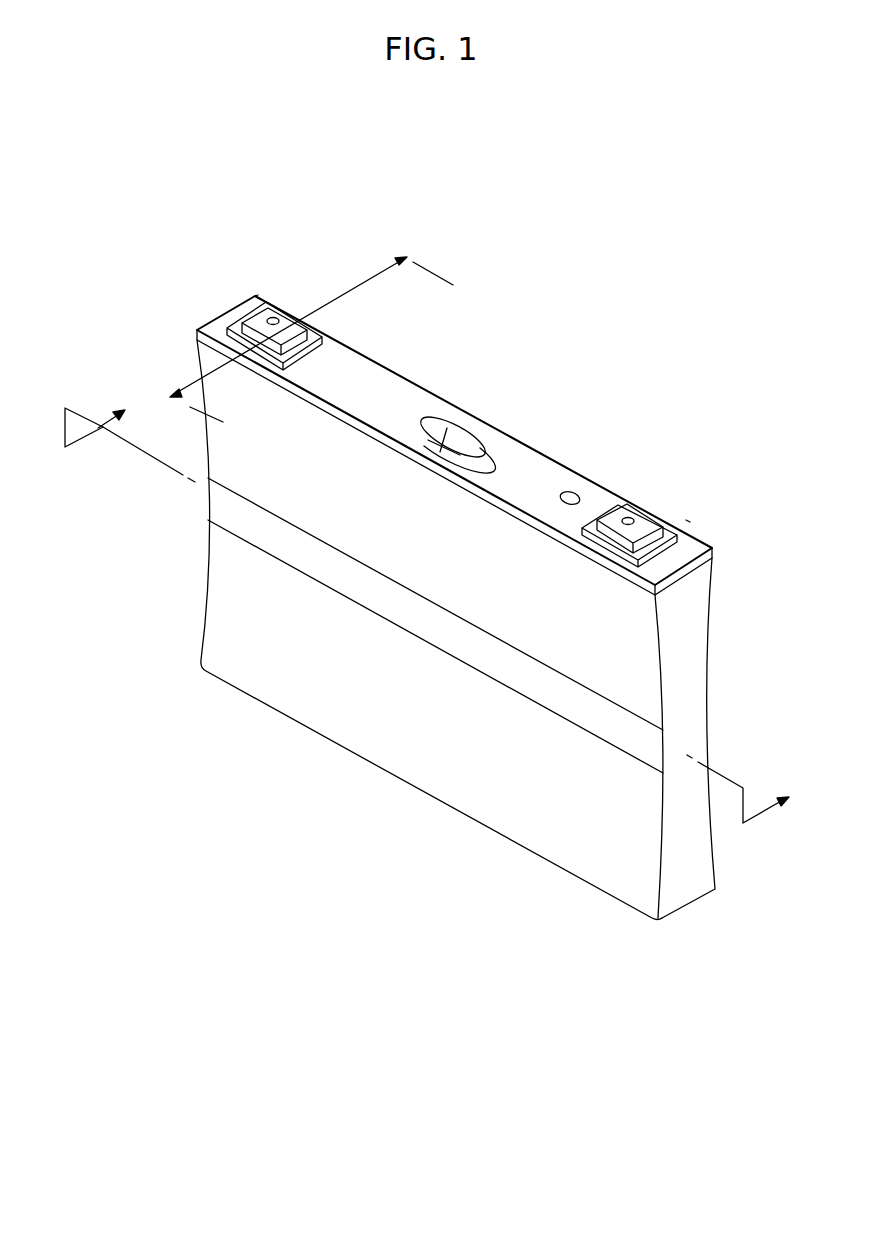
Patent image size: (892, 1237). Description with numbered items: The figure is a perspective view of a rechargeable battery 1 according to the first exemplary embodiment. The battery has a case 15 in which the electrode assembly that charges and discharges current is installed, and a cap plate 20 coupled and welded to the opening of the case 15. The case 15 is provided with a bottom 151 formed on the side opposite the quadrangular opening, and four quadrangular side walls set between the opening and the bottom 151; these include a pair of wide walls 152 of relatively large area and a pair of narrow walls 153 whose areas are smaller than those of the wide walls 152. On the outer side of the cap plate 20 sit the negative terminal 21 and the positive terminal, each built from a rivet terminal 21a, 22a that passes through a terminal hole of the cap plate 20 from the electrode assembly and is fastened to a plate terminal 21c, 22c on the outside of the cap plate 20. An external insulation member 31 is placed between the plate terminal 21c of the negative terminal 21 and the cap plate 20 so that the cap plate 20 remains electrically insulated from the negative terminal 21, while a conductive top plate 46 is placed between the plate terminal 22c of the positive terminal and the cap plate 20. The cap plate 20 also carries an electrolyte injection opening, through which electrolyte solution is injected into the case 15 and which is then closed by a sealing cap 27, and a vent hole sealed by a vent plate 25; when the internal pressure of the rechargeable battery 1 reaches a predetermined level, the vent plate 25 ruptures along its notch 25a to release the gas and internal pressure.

The rechargeable battery 1 is at (445, 182).
The case 15 is at (708, 996).
The bottom 151 is at (533, 858).
The wide walls 152 is at (605, 863).
The narrow walls 153 is at (682, 880).
The cap plate 20 is at (368, 378).
The negative terminal 21 is at (243, 324).
The rivet terminal 21a is at (270, 310).
The plate terminal 21c is at (293, 322).
The rivet terminal 22a is at (630, 518).
The plate terminal 22c is at (670, 530).
The vent plate 25 is at (437, 428).
The notch 25a is at (467, 447).
The sealing cap 27 is at (574, 495).
The external insulation member 31 is at (232, 325).
The conductive top plate 46 is at (688, 520).